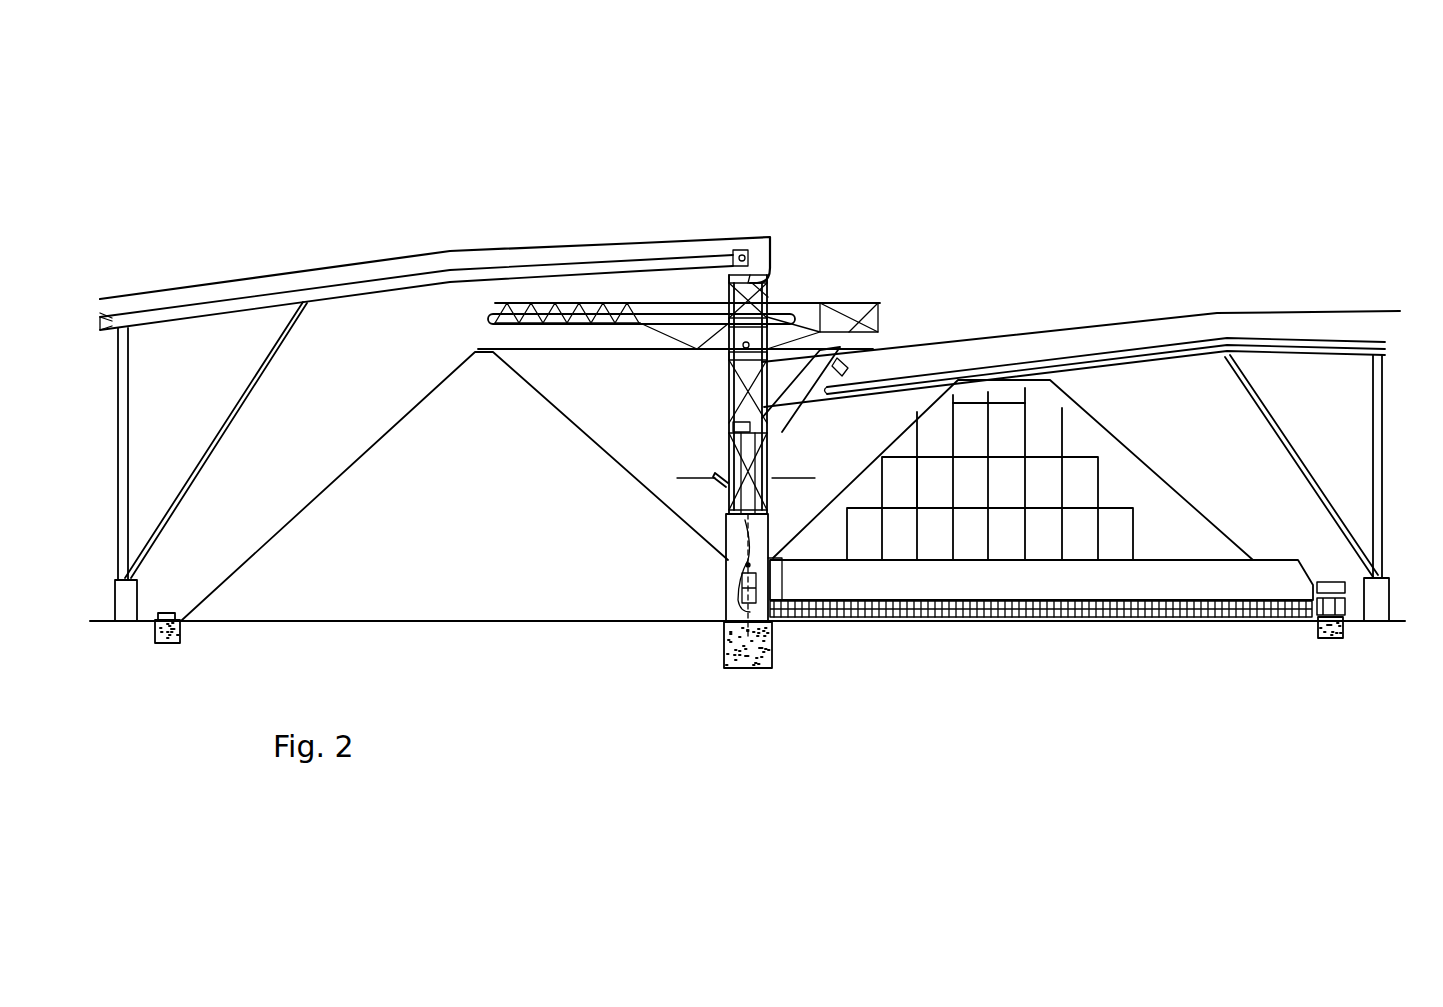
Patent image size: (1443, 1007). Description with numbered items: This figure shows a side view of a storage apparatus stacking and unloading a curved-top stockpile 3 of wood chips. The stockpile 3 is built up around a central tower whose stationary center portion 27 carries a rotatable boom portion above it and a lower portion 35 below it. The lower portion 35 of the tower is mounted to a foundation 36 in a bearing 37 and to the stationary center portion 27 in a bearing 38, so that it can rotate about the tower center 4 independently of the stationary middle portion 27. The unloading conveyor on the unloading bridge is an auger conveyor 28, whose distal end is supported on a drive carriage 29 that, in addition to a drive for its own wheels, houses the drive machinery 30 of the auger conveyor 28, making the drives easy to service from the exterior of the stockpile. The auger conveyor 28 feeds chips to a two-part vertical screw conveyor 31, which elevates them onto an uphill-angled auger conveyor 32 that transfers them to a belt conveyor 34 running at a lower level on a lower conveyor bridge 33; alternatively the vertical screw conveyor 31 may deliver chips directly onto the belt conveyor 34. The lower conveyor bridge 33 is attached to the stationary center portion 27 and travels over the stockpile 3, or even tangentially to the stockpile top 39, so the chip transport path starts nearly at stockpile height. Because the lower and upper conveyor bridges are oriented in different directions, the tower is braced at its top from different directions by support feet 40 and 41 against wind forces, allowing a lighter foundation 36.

The curved-top stockpile 3 is at (380, 473).
The tower center 4 is at (747, 250).
The stationary center portion of the tower 27 is at (728, 386).
The auger conveyor 28 is at (902, 617).
The drive carriage 29 is at (1340, 603).
The drive machinery 30 is at (1342, 582).
The two-part vertical screw conveyor 31 is at (770, 480).
The uphill-angled auger conveyor 32 is at (790, 412).
The lower conveyor bridge 33 is at (930, 357).
The belt conveyor 34 is at (978, 372).
The lower portion of the tower 35 is at (733, 533).
The foundation 36 is at (723, 658).
The bearing 37 is at (722, 622).
The bearing 38 is at (768, 517).
The stockpile top 39 is at (477, 352).
The support foot 40 is at (1377, 570).
The support foot 41 is at (125, 560).